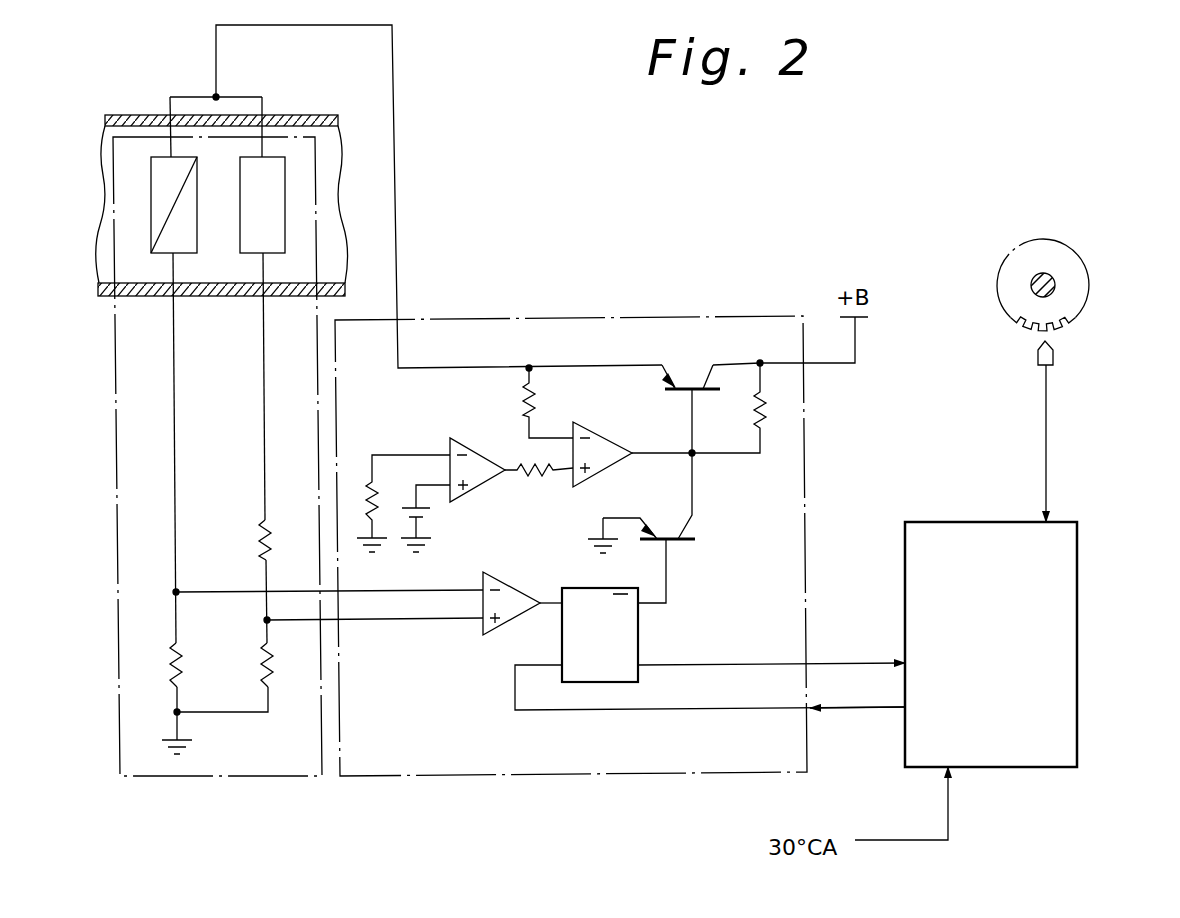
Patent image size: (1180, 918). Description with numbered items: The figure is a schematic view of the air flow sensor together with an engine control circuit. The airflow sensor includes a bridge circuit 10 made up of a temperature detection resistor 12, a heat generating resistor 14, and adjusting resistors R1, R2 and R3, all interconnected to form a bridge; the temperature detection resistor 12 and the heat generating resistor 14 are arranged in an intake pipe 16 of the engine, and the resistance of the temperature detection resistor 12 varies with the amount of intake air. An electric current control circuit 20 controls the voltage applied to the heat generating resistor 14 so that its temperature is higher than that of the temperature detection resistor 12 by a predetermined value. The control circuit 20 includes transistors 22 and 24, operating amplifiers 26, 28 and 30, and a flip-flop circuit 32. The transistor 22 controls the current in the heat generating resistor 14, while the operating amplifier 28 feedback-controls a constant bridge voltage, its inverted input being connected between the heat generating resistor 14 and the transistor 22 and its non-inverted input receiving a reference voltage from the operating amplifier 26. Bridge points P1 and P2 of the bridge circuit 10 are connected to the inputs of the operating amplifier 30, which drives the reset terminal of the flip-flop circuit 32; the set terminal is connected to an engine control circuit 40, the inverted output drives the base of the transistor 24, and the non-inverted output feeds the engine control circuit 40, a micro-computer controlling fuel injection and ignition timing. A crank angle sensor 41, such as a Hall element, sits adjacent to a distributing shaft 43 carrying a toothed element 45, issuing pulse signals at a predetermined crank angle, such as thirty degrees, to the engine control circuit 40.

The bridge circuit 10 is at (118, 718).
The temperature detection resistor 12 is at (151, 210).
The heat generating resistor 14 is at (287, 205).
The intake pipe 16 is at (297, 112).
The electric current control circuit 20 is at (541, 778).
The transistor 22 is at (697, 392).
The transistor 24 is at (670, 543).
The operating amplifier 26 is at (487, 445).
The operating amplifier 28 is at (605, 433).
The operating amplifier 30 is at (518, 580).
The flip-flop circuit 32 is at (640, 637).
The engine control circuit 40 is at (980, 521).
The crank angle sensor 41 is at (1055, 357).
The distributing shaft 43 is at (1057, 287).
The toothed element 45 is at (1052, 326).
The adjusting resistor R1 is at (183, 665).
The adjusting resistor R2 is at (259, 548).
The adjusting resistor R3 is at (274, 676).
The bridge point P1 is at (174, 592).
The bridge point P2 is at (265, 620).